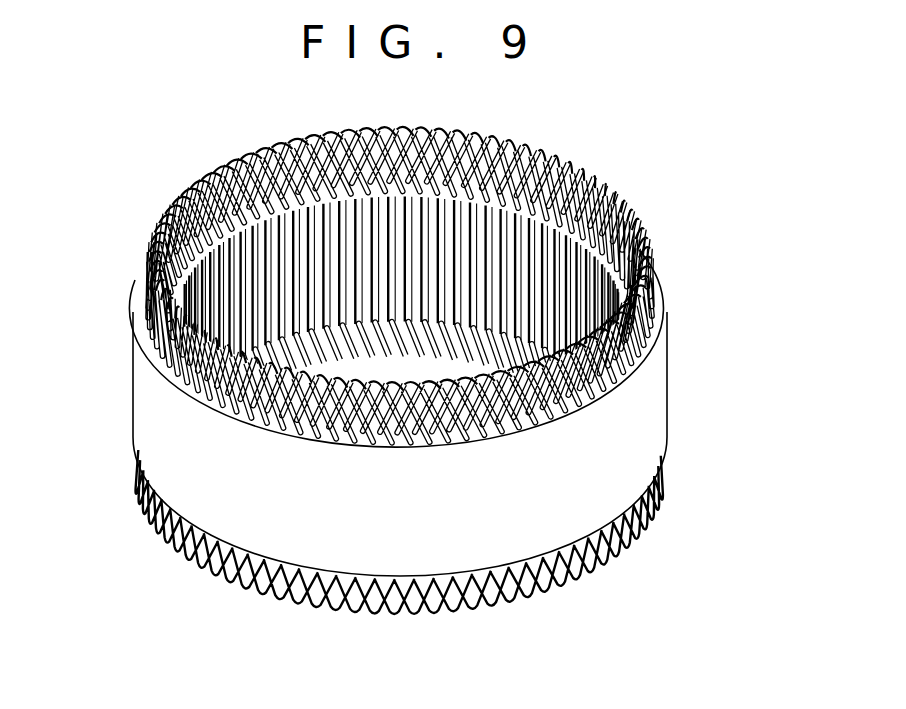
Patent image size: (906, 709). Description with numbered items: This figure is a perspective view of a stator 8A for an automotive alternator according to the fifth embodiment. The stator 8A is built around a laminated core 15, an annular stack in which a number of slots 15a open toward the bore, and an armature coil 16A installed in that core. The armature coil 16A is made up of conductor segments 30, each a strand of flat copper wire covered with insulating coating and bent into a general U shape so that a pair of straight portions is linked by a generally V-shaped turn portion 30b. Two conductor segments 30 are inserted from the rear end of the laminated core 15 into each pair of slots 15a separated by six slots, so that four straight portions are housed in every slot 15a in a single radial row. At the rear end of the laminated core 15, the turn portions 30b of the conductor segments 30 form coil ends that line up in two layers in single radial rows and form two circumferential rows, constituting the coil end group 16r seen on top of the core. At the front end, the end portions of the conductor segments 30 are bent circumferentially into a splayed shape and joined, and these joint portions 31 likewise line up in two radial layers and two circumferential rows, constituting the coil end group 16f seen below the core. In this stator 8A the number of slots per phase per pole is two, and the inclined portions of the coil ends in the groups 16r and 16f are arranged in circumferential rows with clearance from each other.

The stator 8A is at (122, 182).
The laminated core 15 is at (670, 417).
The slots 15a is at (633, 370).
The armature coil 16A is at (729, 278).
The coil end group 16r is at (143, 236).
The coil end group 16f is at (143, 509).
The conductor segment 30 is at (636, 225).
The turn portion 30b is at (608, 204).
The joint portions 31 is at (570, 572).